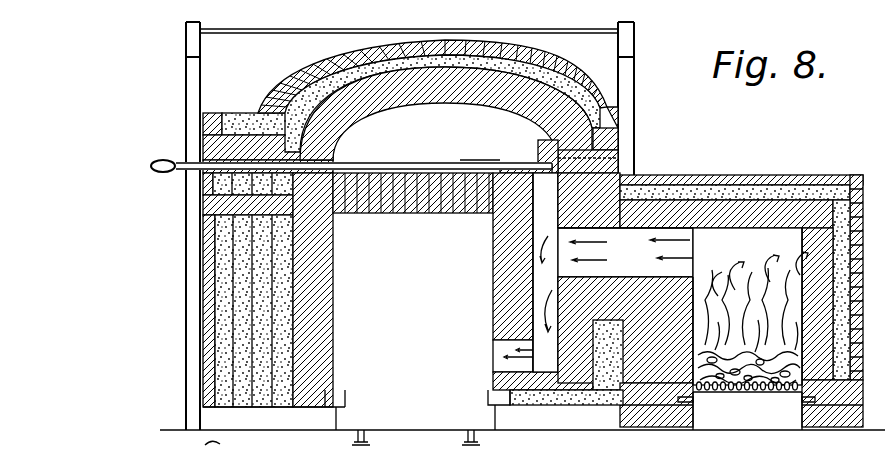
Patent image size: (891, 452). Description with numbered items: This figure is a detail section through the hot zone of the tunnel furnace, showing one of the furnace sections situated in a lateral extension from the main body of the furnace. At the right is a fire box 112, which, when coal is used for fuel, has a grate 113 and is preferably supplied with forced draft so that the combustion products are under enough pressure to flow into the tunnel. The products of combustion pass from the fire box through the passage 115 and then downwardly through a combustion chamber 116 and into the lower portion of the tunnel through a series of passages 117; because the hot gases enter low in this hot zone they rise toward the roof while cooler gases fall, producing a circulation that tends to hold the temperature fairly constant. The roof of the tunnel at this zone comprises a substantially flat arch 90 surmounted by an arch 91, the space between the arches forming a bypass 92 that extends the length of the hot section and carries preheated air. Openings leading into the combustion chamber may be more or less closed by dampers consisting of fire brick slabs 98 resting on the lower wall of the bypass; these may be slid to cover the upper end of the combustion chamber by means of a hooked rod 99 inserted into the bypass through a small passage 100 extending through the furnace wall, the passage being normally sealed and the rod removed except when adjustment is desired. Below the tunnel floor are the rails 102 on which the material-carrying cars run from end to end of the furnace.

The flat arch 90 is at (444, 217).
The arch 91 is at (450, 104).
The bypass 92 is at (480, 148).
The fire brick slabs 98 is at (545, 160).
The hooked rod 99 is at (402, 163).
The small passage 100 is at (338, 159).
The rails 102 is at (362, 428).
The fire box 112 is at (750, 306).
The grate 113 is at (742, 392).
The passage 115 is at (625, 252).
The combustion chamber 116 is at (550, 272).
The passages 117 is at (500, 350).